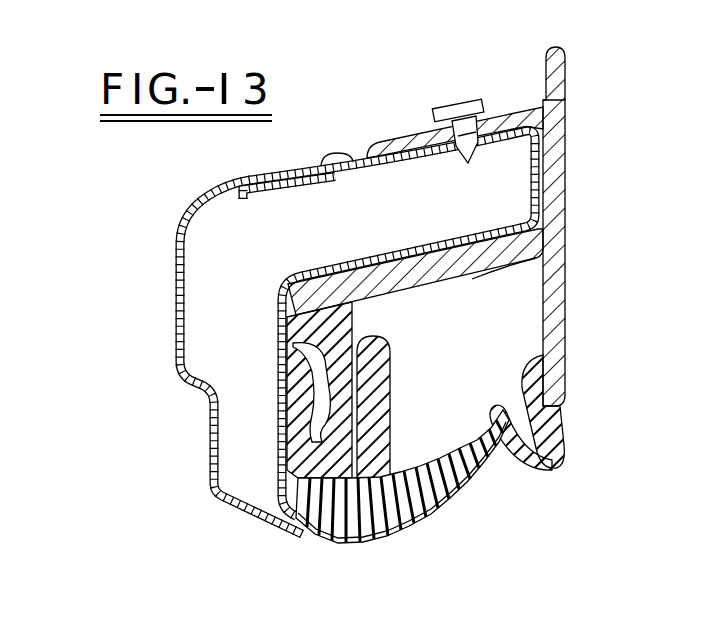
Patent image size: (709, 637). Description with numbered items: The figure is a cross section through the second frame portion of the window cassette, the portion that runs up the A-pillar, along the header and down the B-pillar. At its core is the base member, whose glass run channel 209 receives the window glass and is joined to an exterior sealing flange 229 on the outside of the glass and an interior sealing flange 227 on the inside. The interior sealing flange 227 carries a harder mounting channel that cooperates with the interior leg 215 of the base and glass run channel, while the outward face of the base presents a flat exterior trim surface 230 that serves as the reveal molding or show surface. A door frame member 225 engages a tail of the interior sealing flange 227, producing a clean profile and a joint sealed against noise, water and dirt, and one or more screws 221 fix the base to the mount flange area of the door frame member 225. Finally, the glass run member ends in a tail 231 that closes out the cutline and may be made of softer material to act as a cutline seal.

The glass run channel 209 is at (474, 274).
The interior leg 215 is at (358, 303).
The screw 221 is at (444, 102).
The door frame member 225 is at (175, 312).
The interior sealing flange 227 is at (432, 503).
The exterior sealing flange 229 is at (528, 464).
The exterior trim surface 230 is at (566, 272).
The tail 231 is at (565, 58).